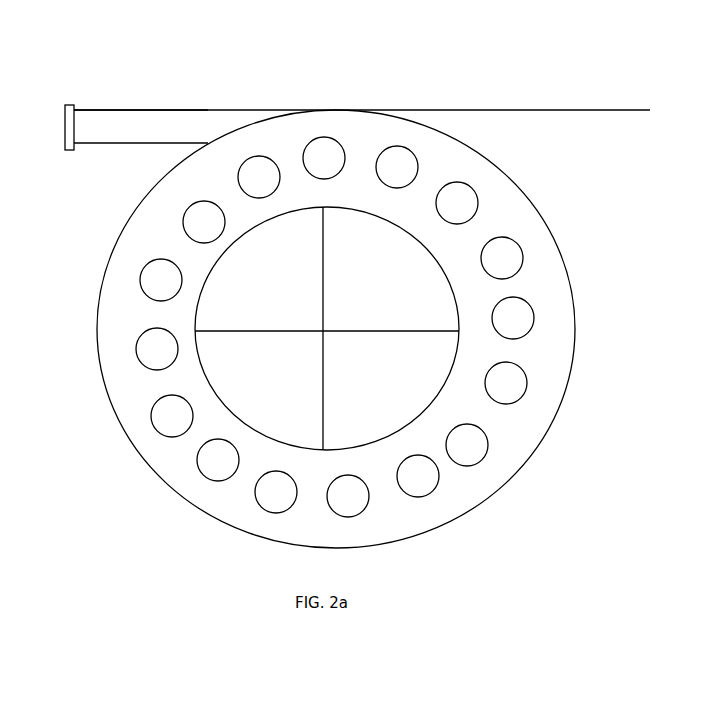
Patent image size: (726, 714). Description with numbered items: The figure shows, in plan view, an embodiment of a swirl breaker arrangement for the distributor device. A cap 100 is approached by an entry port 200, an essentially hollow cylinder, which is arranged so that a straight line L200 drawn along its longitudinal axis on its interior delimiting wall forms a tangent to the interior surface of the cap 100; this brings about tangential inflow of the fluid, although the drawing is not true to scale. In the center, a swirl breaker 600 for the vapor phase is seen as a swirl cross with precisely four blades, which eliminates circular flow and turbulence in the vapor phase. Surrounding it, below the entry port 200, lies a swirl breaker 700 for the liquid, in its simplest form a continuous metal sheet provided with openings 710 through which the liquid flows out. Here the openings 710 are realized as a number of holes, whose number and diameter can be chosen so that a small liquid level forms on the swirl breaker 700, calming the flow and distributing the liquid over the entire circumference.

The cap 100 is at (725, 393).
The entry port 200 is at (150, 125).
The straight line along the longitudinal axis of the entry port L200 is at (603, 110).
The swirl breaker for the vapor phase 600 is at (348, 328).
The swirl breaker for liquid 700 is at (433, 160).
The openings 710 is at (455, 201).